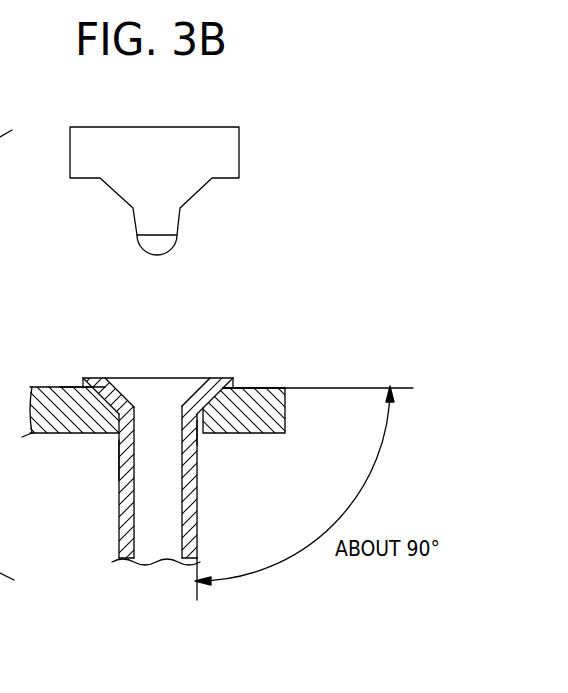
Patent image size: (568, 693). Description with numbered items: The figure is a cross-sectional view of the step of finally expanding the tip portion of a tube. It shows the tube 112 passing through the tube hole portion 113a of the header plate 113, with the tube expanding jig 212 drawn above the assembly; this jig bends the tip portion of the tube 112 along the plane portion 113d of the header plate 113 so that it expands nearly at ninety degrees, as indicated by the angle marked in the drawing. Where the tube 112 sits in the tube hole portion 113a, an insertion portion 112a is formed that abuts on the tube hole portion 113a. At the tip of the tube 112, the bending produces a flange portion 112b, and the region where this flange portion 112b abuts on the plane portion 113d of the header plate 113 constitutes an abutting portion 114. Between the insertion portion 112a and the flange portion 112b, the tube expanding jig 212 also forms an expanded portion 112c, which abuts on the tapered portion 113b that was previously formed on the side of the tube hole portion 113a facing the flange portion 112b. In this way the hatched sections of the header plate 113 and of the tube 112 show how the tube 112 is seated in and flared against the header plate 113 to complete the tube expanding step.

The tube expanding jig 212 is at (222, 162).
The tube 112 is at (211, 452).
The insertion portion 112a is at (205, 433).
The flange portion 112b is at (222, 378).
The expanded portion 112c is at (265, 400).
The abutting portion 114 is at (180, 393).
The header plate 113 is at (171, 428).
The plane portion 113d is at (65, 395).
The tube hole portion 113a is at (118, 473).
The tapered portion 113b is at (83, 395).